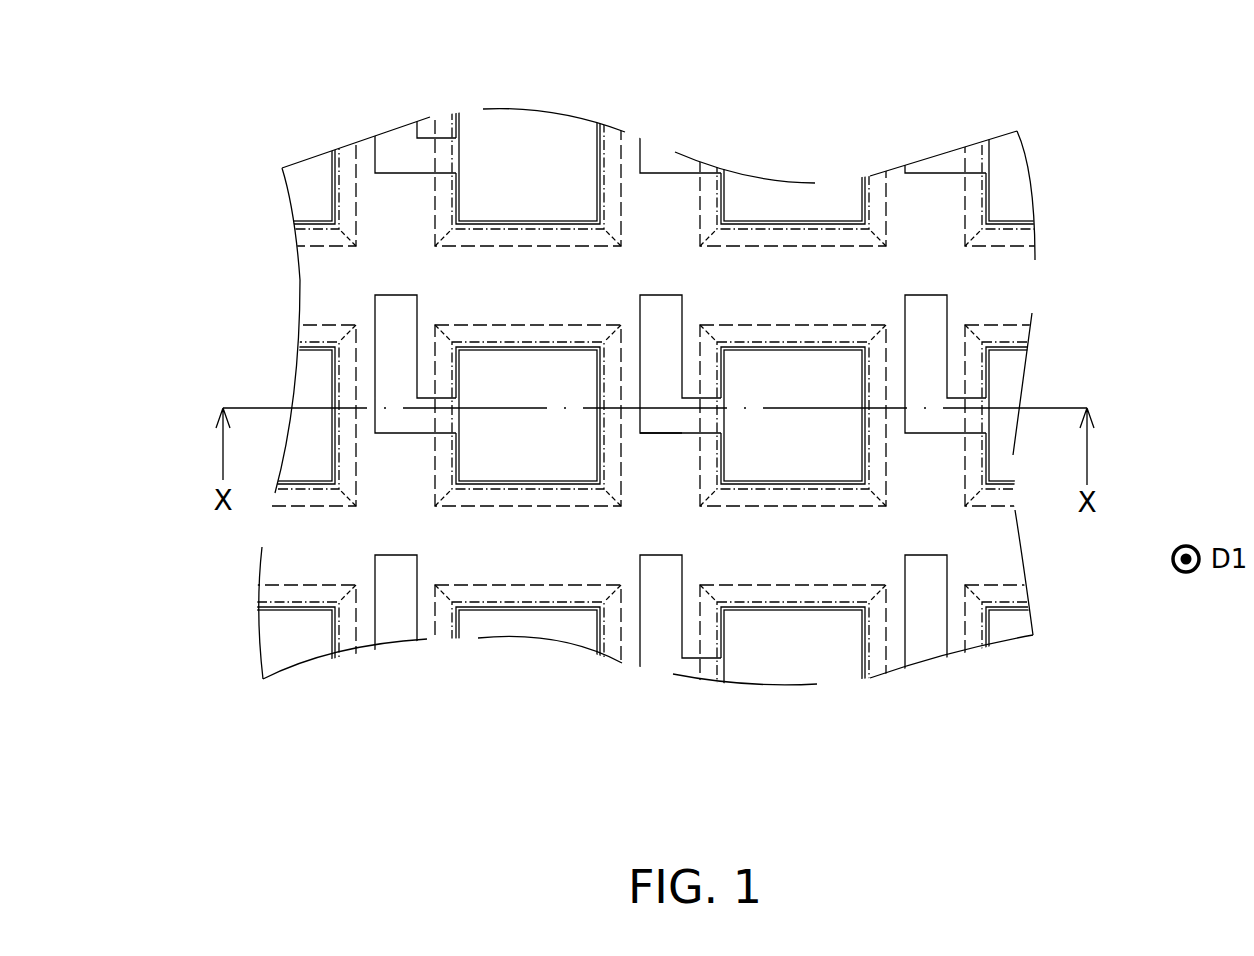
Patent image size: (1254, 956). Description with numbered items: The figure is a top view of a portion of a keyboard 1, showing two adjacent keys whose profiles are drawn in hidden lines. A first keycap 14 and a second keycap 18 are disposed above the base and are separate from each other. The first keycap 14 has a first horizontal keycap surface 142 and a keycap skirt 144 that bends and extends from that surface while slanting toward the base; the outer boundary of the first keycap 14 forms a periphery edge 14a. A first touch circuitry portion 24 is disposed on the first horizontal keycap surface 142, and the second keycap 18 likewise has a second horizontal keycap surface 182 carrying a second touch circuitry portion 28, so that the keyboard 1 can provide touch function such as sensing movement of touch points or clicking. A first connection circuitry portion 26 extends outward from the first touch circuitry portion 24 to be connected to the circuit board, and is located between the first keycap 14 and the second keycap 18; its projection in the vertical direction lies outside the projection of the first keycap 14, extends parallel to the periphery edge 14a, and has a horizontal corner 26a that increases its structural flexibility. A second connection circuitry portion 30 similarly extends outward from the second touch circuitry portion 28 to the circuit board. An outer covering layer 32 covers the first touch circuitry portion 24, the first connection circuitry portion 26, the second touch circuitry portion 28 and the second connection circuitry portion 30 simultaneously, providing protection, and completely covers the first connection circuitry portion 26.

The keyboard 1 is at (143, 100).
The first keycap 14 is at (794, 527).
The periphery edge 14a is at (687, 346).
The first horizontal keycap surface 142 is at (838, 343).
The keycap skirt 144 is at (766, 328).
The second keycap 18 is at (524, 525).
The second horizontal keycap surface 182 is at (510, 347).
The first touch circuitry portion 24 is at (743, 482).
The first connection circuitry portion 26 is at (660, 433).
The horizontal corner 26a is at (650, 423).
The second touch circuitry portion 28 is at (456, 457).
The second connection circuitry portion 30 is at (397, 433).
The outer covering layer 32 is at (1012, 287).